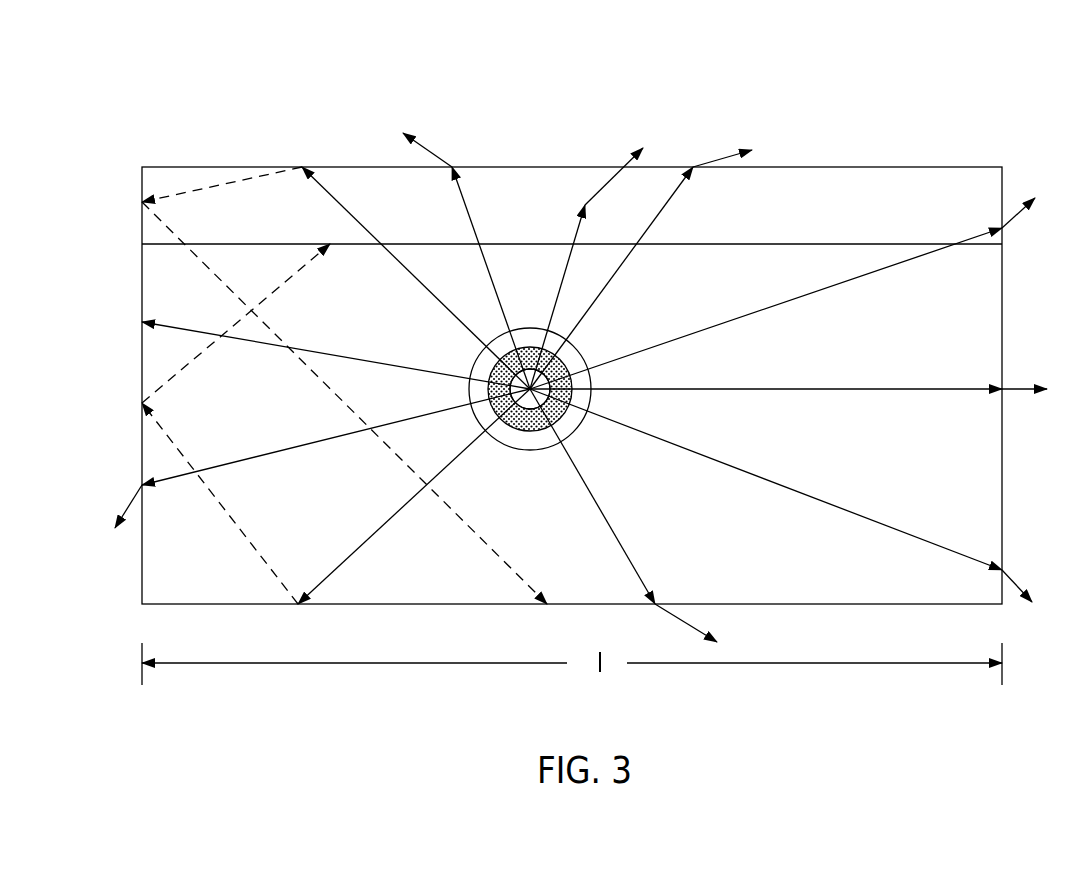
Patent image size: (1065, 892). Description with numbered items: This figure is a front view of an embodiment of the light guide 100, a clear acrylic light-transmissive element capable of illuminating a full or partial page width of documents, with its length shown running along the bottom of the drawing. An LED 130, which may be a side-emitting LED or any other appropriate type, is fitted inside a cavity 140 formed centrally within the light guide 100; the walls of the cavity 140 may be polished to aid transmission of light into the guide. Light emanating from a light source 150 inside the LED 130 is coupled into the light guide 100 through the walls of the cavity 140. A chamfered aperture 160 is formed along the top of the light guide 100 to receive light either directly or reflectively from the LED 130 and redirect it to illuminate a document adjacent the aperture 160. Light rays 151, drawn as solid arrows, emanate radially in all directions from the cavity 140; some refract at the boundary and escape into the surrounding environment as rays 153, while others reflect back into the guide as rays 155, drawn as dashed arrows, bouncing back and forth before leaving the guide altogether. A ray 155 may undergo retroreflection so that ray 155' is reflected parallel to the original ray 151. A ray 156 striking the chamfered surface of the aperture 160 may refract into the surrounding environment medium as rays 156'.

The light guide 100 is at (727, 110).
The chamfered aperture 160 is at (875, 192).
The cavity 140 is at (540, 448).
The LED 130 is at (568, 413).
The light source 150 is at (570, 362).
The light rays 151 is at (850, 284).
The rays 153 is at (1013, 393).
The rays 155 is at (220, 503).
The ray 155' is at (344, 385).
The ray 156 is at (572, 278).
The rays 156' is at (577, 160).